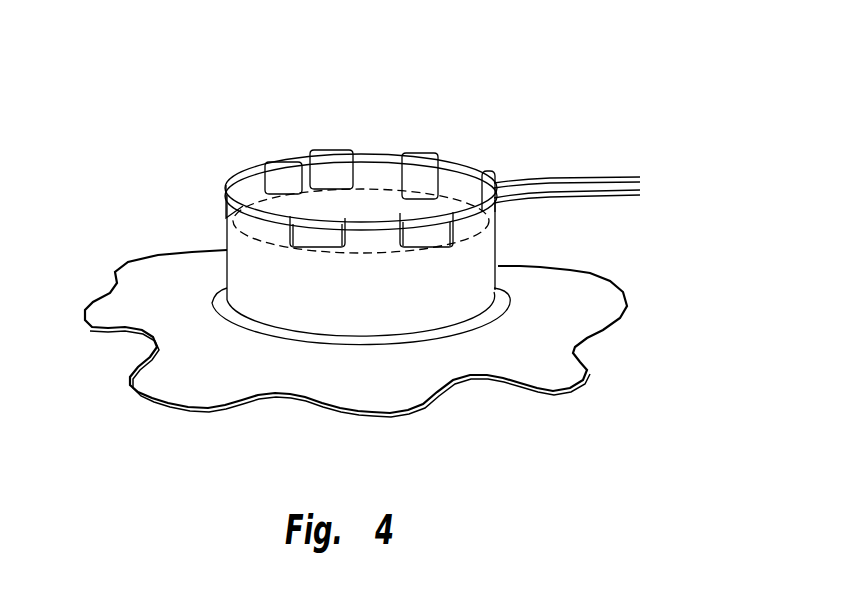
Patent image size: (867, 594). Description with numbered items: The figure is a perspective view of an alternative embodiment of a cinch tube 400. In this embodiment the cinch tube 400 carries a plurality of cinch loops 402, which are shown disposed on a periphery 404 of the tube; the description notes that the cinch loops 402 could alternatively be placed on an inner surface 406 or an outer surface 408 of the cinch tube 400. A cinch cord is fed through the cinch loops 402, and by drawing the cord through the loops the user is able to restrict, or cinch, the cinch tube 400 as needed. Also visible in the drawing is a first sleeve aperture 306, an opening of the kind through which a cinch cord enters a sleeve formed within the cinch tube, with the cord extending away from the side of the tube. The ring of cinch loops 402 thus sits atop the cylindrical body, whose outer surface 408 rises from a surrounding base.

The sensor assembly 400 is at (218, 148).
The tabs 402 is at (414, 158).
The cylindrical housing 404 is at (228, 218).
The adhesive puddle / base 406 is at (374, 307).
The rim cap 408 is at (417, 213).
The cable 306 is at (601, 171).